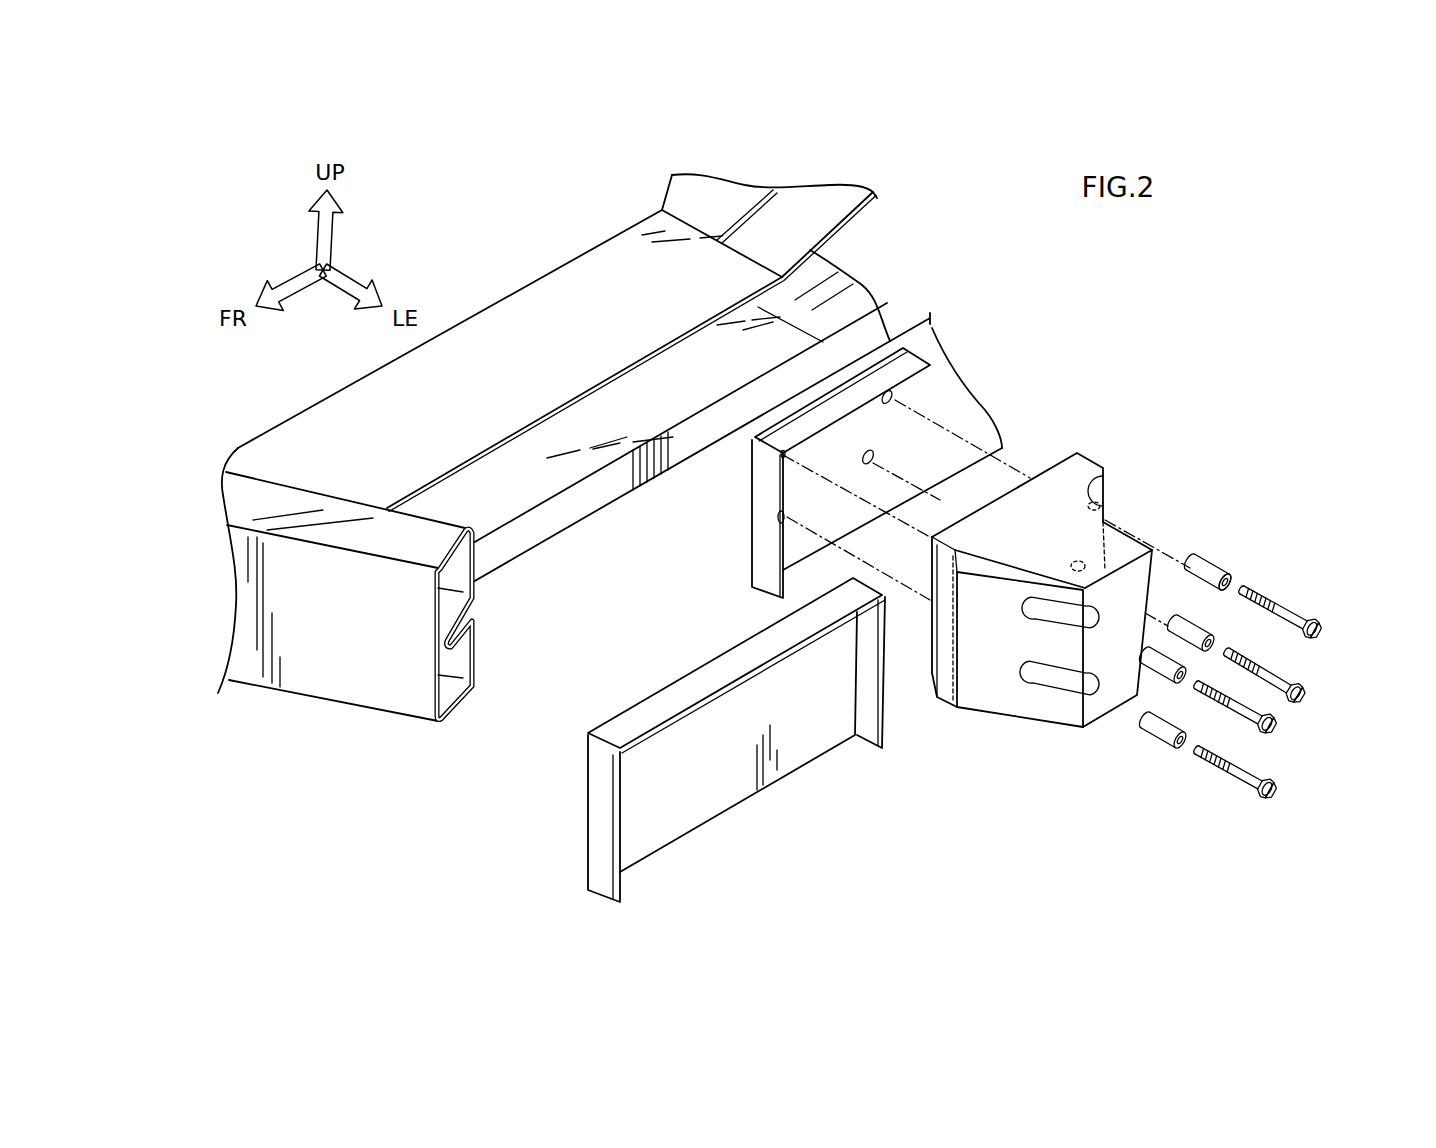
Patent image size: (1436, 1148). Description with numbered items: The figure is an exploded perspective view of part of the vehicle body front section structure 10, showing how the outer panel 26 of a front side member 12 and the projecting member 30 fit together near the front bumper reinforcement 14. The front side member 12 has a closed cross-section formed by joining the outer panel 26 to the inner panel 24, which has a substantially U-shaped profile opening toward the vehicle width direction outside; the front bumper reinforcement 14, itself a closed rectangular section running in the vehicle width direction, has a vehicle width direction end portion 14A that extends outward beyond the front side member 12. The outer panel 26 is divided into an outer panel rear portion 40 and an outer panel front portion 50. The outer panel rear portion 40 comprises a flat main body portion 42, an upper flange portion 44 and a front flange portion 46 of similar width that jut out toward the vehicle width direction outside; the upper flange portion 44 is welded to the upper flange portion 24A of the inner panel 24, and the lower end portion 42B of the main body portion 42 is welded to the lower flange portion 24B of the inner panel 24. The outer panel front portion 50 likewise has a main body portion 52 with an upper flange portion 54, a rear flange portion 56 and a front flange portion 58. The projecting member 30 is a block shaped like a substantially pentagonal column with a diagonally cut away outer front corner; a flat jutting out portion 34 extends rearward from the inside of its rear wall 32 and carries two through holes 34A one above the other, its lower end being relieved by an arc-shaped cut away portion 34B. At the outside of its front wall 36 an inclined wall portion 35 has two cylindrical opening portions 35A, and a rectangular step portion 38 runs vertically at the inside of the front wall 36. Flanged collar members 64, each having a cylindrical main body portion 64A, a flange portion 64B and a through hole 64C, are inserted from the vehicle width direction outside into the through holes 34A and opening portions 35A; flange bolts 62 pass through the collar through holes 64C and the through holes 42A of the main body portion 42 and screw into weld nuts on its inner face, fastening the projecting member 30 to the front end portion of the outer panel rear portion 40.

The vehicle body front section structure 10 is at (998, 825).
The front side member 12 is at (545, 265).
The front bumper reinforcement 14 is at (292, 702).
The vehicle width direction end portion 14A is at (448, 724).
The inner panel 24 is at (492, 320).
The upper flange portion 24A is at (652, 358).
The lower flange portion 24B is at (541, 538).
The outer panel 26 is at (779, 576).
The projecting member 30 is at (1039, 605).
The rear wall 32 is at (1130, 532).
The jutting out portion 34 is at (1106, 478).
The through holes 34A is at (1108, 505).
The cut away portion 34B is at (1097, 573).
The inclined wall portion 35 is at (1015, 702).
The opening portions 35A is at (1036, 598).
The front wall 36 is at (940, 701).
The step portion 38 is at (933, 558).
The outer panel rear portion 40 is at (859, 444).
The main body portion 42 is at (970, 416).
The through holes 42A is at (895, 395).
The lower end portion 42B is at (803, 553).
The upper flange portion 44 is at (826, 402).
The front flange portion 46 is at (758, 541).
The outer panel front portion 50 is at (704, 740).
The main body portion 52 is at (788, 758).
The upper flange portion 54 is at (648, 716).
The rear flange portion 56 is at (875, 735).
The front flange portion 58 is at (598, 834).
The flange bolts 62 is at (1318, 620).
The flanged collar members 64 is at (1220, 558).
The main body portions 64A is at (1197, 562).
The flange portions 64B is at (1233, 584).
The through holes 64C is at (1180, 751).